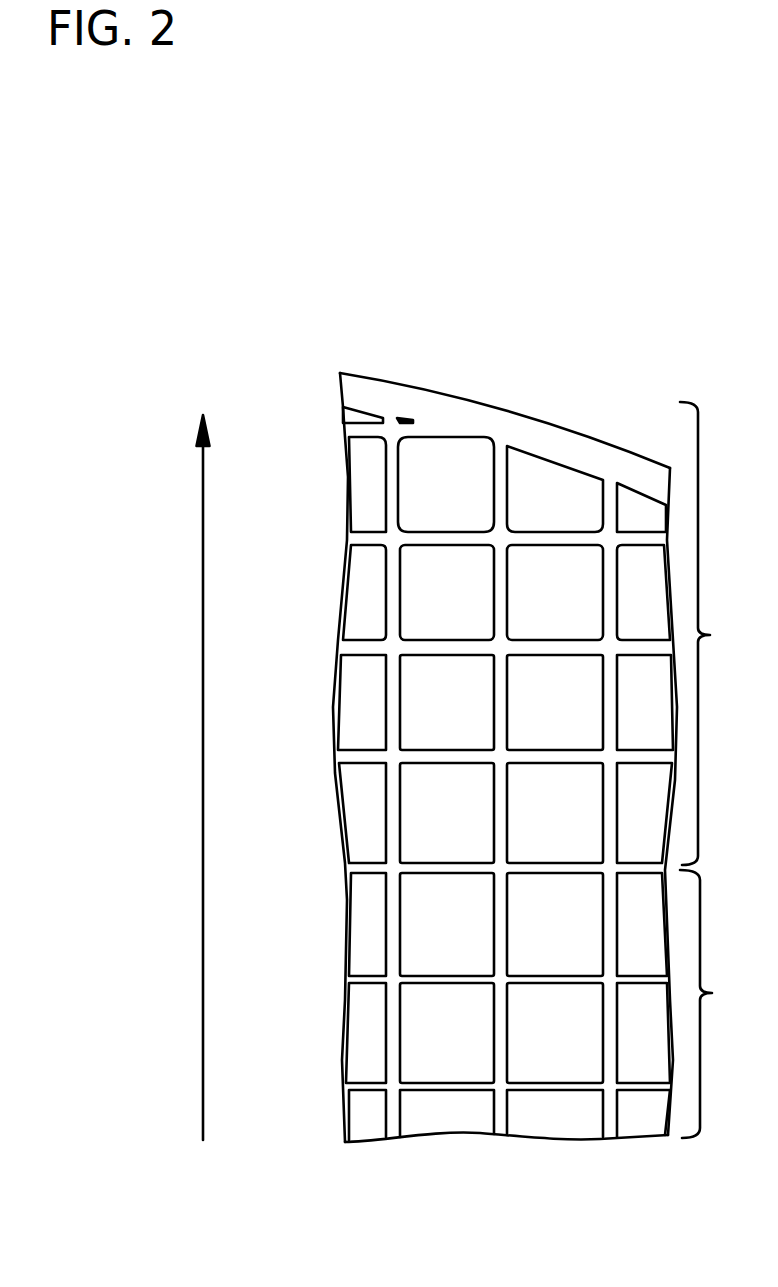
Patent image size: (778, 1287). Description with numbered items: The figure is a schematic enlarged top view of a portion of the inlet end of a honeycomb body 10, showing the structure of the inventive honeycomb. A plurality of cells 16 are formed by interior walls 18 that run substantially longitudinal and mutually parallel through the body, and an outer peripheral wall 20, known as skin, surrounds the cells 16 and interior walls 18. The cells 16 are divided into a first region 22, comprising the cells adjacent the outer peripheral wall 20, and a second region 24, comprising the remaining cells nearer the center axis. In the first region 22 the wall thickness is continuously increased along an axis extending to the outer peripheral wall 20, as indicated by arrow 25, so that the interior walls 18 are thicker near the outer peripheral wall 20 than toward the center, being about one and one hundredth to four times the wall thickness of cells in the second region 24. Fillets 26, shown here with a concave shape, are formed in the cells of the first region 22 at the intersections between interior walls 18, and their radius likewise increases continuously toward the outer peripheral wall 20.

The honeycomb body 10 is at (367, 312).
The cells 16 is at (437, 668).
The interior walls 18 is at (392, 483).
The outer peripheral wall 20 is at (588, 460).
The first region 22 is at (715, 633).
The second region 24 is at (715, 1004).
The arrow 25 is at (205, 520).
The fillets 26 is at (500, 647).